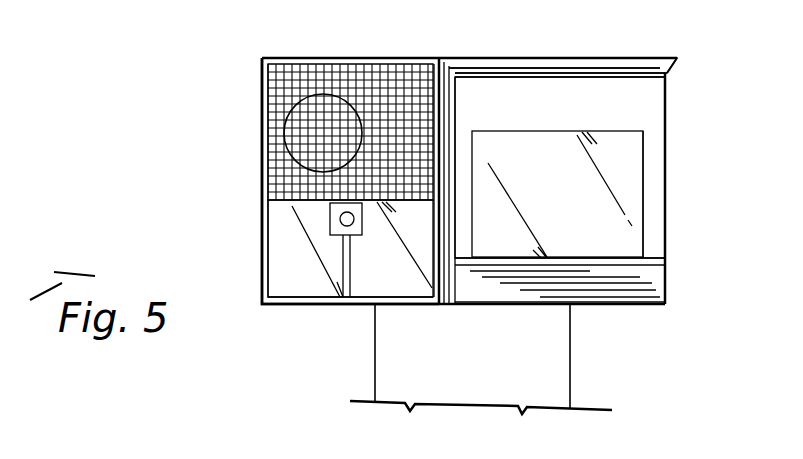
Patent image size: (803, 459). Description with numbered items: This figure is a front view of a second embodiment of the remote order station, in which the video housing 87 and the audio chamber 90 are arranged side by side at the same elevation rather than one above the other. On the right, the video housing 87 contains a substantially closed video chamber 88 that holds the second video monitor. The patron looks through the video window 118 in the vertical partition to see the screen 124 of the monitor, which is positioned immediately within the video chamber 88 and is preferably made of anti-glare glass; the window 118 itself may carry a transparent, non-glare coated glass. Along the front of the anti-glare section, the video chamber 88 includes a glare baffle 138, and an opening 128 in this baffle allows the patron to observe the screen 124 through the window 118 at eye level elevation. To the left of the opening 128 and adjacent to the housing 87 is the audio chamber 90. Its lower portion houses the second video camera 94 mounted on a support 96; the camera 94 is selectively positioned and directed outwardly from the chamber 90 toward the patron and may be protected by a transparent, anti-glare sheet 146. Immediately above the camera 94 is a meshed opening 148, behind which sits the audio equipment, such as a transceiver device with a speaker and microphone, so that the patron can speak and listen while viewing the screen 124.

The video housing 87 is at (560, 108).
The video chamber 88 is at (640, 88).
The audio chamber 90 is at (265, 182).
The second video camera 94 is at (330, 217).
The support 96 is at (343, 248).
The video window 118 is at (647, 197).
The screen 124 is at (565, 193).
The opening 128 is at (652, 142).
The glare baffle 138 is at (642, 275).
The transparent anti-glare sheet 146 is at (303, 283).
The meshed opening 148 is at (393, 85).